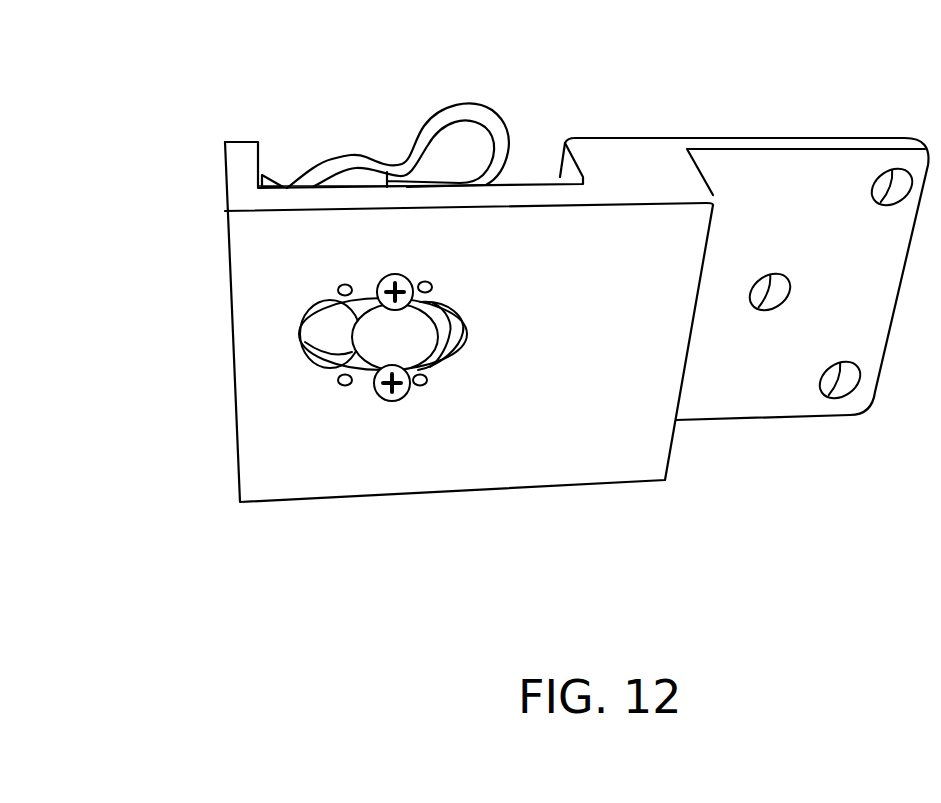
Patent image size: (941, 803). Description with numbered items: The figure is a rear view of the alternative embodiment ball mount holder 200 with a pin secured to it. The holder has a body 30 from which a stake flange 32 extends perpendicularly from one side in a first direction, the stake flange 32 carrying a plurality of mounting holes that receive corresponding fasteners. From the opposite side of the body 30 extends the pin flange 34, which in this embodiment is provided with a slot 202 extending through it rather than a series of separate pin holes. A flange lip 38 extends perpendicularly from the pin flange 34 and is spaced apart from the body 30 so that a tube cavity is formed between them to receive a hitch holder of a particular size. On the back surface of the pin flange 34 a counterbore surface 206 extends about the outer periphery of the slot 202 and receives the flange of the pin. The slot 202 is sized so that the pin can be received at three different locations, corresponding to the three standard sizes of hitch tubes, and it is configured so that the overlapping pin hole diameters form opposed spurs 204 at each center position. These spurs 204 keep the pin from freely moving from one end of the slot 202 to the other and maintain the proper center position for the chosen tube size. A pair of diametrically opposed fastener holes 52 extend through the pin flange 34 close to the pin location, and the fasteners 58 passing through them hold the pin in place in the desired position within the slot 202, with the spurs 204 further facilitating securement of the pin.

The ball mount holder 200 is at (593, 86).
The body 30 is at (643, 170).
The stake flange 32 is at (800, 173).
The pin flange 34 is at (527, 195).
The flange lip 38 is at (245, 162).
The fastener holes 52 is at (428, 281).
The fasteners 58 is at (403, 283).
The slot 202 is at (338, 332).
The spurs 204 is at (370, 305).
The counterbore surface 206 is at (470, 333).